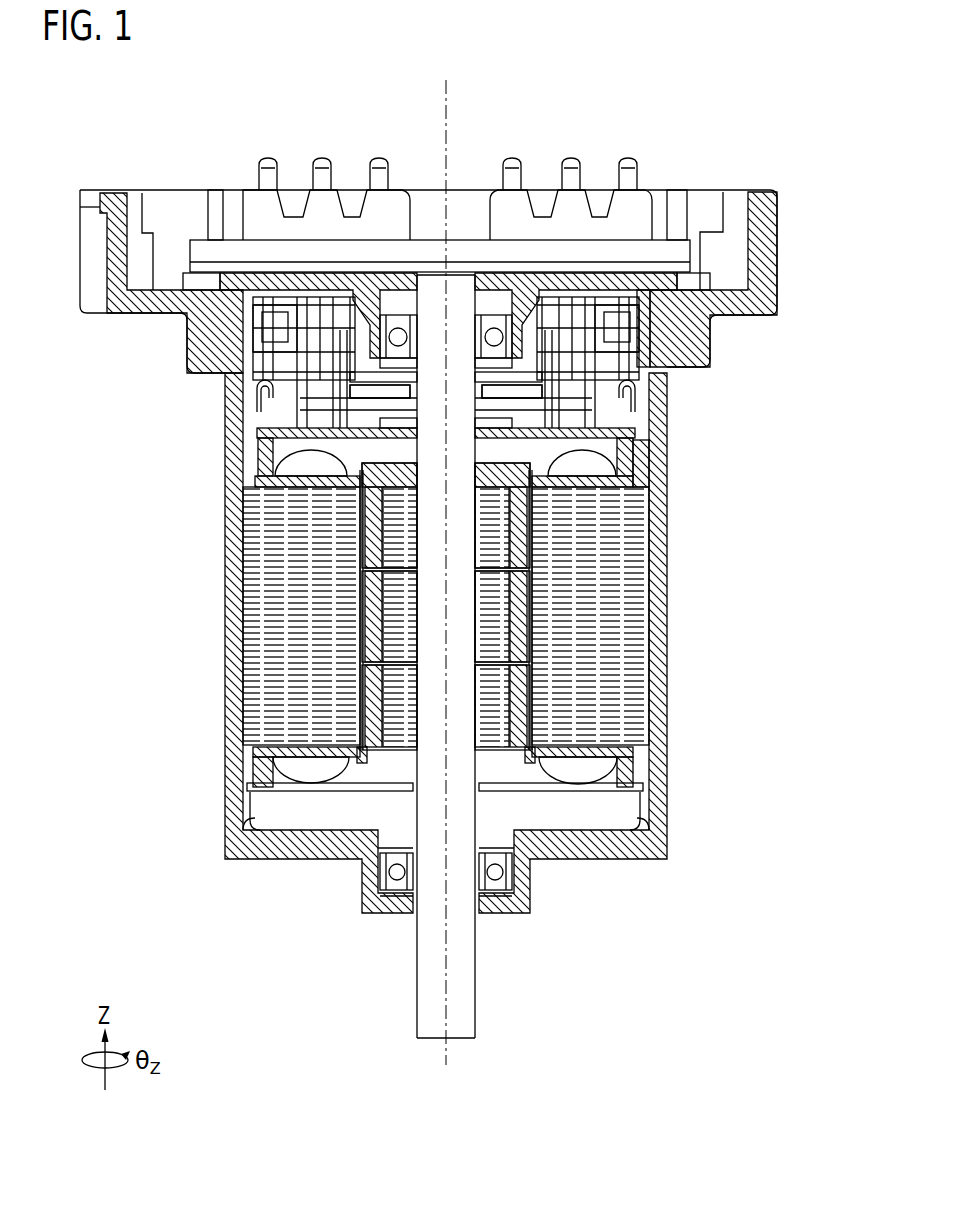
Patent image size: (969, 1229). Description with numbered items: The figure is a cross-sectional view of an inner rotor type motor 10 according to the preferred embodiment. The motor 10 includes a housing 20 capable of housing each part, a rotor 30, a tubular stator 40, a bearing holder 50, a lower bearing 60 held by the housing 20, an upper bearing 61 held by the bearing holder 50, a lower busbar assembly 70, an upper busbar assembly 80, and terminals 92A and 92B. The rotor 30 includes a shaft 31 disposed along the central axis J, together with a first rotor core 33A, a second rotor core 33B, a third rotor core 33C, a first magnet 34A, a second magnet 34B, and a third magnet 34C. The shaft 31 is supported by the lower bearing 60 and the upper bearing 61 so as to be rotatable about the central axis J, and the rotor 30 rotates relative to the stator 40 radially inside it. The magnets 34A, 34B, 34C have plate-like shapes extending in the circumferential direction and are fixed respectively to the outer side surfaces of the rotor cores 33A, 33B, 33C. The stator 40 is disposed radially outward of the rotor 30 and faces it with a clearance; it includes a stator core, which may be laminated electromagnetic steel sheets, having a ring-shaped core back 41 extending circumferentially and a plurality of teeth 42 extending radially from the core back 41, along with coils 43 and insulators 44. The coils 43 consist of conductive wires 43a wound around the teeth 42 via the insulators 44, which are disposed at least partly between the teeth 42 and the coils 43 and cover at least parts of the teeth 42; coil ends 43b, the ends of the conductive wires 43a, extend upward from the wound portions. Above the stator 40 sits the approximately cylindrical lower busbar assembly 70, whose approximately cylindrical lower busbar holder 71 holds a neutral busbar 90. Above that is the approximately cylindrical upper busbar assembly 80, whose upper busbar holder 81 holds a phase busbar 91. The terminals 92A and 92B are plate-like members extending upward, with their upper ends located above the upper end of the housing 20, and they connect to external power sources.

The motor 10 is at (749, 158).
The housing 20 is at (672, 697).
The rotor 30 is at (487, 1016).
The shaft 31 is at (424, 1036).
The first rotor core 33A is at (398, 732).
The second rotor core 33B is at (395, 641).
The third rotor core 33C is at (390, 545).
The first magnet 34A is at (360, 724).
The second magnet 34B is at (362, 623).
The third magnet 34C is at (367, 513).
The stator 40 is at (628, 799).
The core back 41 is at (633, 529).
The teeth 42 is at (578, 622).
The coils 43 is at (606, 462).
The conductive wires 43a is at (548, 779).
The coil ends 43b is at (548, 312).
The insulators 44 is at (652, 474).
The bearing holder 50 is at (618, 259).
The lower bearing 60 is at (493, 881).
The upper bearing 61 is at (421, 316).
The lower busbar assembly 70 is at (642, 415).
The lower busbar holder 71 is at (280, 450).
The upper busbar assembly 80 is at (655, 348).
The upper busbar holder 81 is at (256, 352).
The neutral busbar 90 is at (648, 390).
The phase busbar 91 is at (643, 332).
The terminal 92A is at (379, 157).
The terminal 92B is at (628, 157).
The central axis J is at (447, 94).